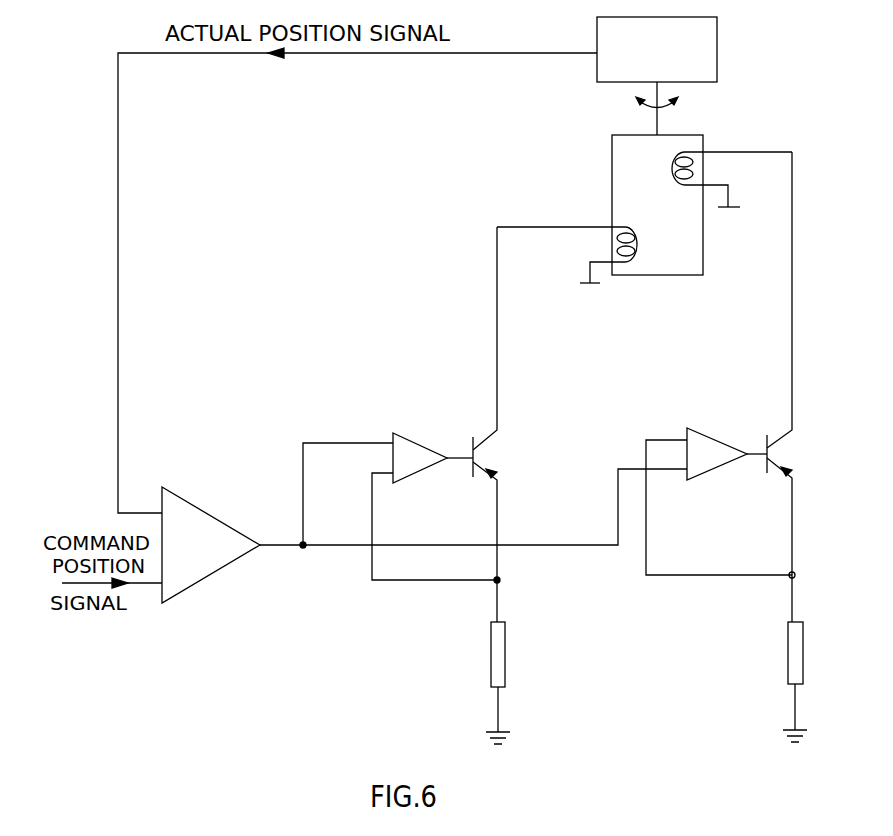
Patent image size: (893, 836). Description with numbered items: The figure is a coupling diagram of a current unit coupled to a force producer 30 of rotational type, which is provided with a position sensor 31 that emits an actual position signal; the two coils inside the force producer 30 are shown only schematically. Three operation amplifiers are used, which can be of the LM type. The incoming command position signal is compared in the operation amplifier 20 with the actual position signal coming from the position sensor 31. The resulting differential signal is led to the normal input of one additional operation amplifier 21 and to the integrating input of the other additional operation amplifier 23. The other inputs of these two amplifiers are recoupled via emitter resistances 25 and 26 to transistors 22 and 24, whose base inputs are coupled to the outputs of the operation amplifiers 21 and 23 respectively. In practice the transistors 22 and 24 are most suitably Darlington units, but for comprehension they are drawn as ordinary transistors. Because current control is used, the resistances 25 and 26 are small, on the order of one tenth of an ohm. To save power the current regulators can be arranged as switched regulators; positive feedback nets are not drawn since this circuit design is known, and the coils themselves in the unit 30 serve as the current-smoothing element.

The operation amplifier 20 is at (162, 603).
The operation amplifier 21 is at (405, 433).
The transistor 22 is at (497, 449).
The operation amplifier 23 is at (725, 440).
The transistor 24 is at (797, 446).
The emitter resistance 25 is at (522, 637).
The emitter resistance 26 is at (822, 633).
The force producer 30 is at (703, 142).
The position sensor 31 is at (717, 55).